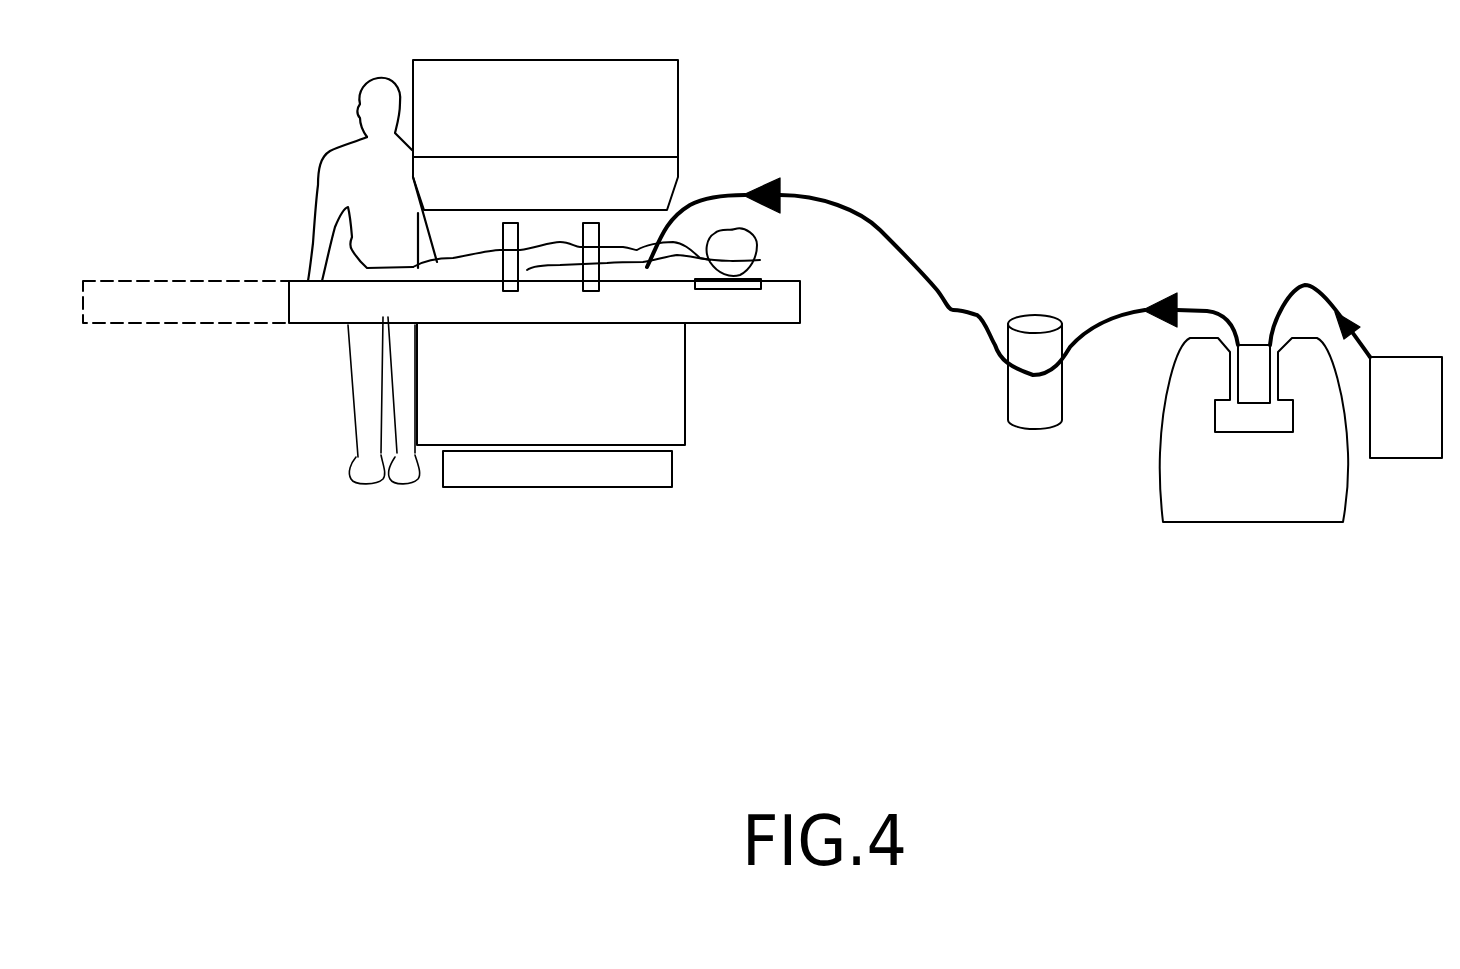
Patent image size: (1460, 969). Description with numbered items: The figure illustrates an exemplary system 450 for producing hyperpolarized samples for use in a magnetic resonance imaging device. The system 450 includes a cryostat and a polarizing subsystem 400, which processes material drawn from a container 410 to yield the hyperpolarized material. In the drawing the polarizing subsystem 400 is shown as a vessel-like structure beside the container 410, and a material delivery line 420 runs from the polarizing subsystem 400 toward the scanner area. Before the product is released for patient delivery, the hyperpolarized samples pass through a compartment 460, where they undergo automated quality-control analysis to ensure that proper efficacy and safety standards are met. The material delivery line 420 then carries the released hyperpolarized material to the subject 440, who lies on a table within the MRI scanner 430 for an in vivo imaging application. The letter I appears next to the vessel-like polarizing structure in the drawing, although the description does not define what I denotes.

The polarizing subsystem 400 is at (1258, 313).
The container 410 is at (1392, 473).
The material delivery line 420 is at (878, 230).
The MRI scanner 430 is at (680, 102).
The subject 440 is at (760, 260).
The system 450 is at (813, 660).
The compartment 460 is at (1035, 316).
The vessel I is at (1187, 481).